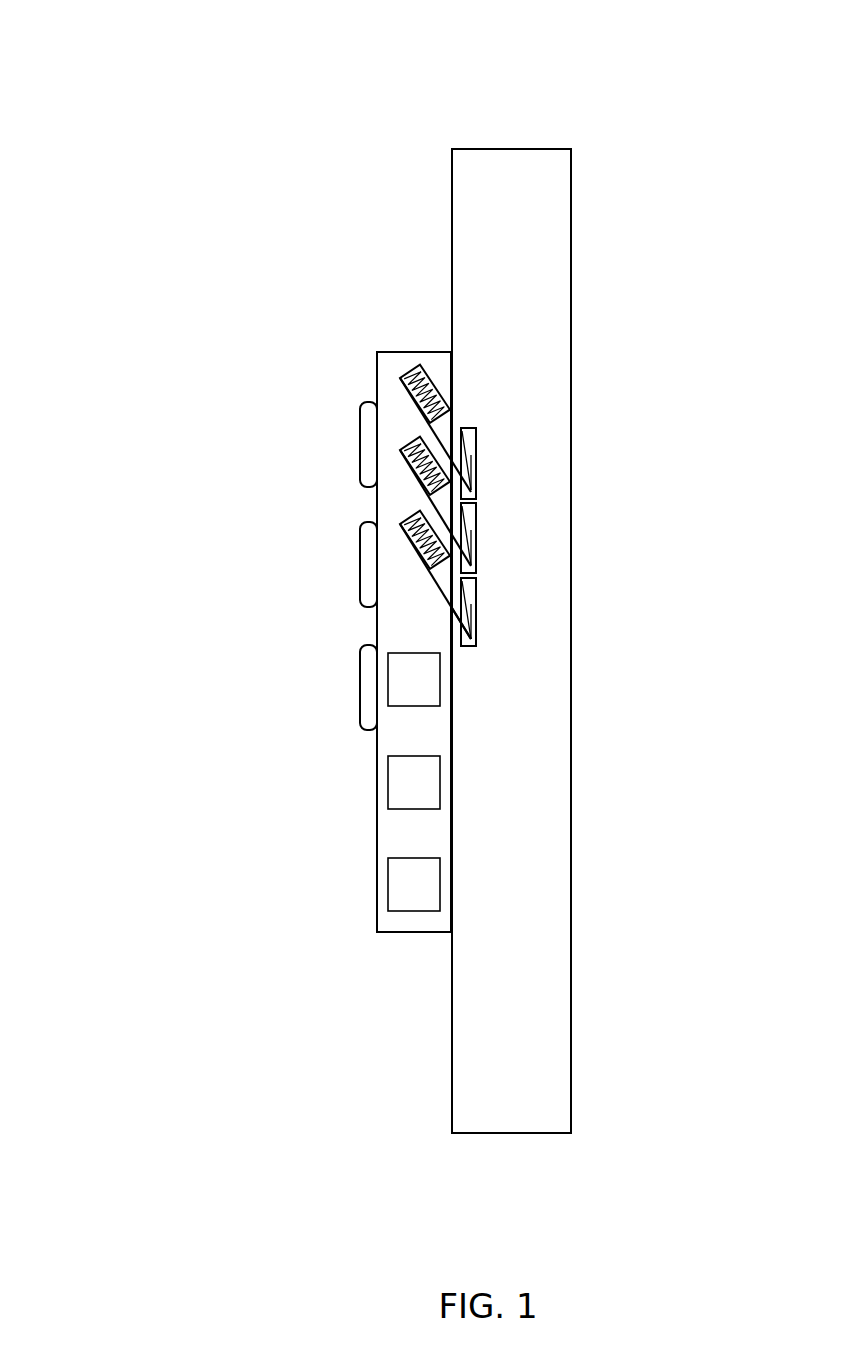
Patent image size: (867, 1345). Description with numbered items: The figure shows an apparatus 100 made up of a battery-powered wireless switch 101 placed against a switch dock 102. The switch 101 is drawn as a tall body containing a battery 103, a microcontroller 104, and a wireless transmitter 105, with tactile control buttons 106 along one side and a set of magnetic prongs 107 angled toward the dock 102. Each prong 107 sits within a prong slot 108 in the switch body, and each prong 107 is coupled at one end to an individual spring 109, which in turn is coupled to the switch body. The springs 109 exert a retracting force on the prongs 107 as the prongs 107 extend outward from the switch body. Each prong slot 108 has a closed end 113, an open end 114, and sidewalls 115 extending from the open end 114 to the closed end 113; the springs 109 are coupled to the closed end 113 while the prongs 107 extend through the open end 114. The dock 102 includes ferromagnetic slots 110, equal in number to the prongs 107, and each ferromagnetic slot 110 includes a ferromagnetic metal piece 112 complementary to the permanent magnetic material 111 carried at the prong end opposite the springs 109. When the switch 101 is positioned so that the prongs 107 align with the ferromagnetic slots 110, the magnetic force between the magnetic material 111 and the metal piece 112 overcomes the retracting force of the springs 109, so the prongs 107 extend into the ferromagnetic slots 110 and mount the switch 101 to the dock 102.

The apparatus 100 is at (123, 72).
The battery-powered wireless switch 101 is at (377, 820).
The switch dock 102 is at (511, 641).
The battery 103 is at (414, 679).
The microcontroller 104 is at (414, 782).
The wireless transmitter 105 is at (414, 884).
The tactile control buttons 106 is at (360, 446).
The magnetic prongs 107 is at (452, 594).
The prong slots 108 is at (410, 547).
The springs 109 is at (423, 371).
The ferromagnetic slots 110 is at (458, 424).
The permanent magnetic material 111 is at (473, 533).
The ferromagnetic metal piece 112 is at (508, 516).
The closed end 113 is at (411, 438).
The open end 114 is at (452, 620).
The sidewalls 115 is at (413, 468).